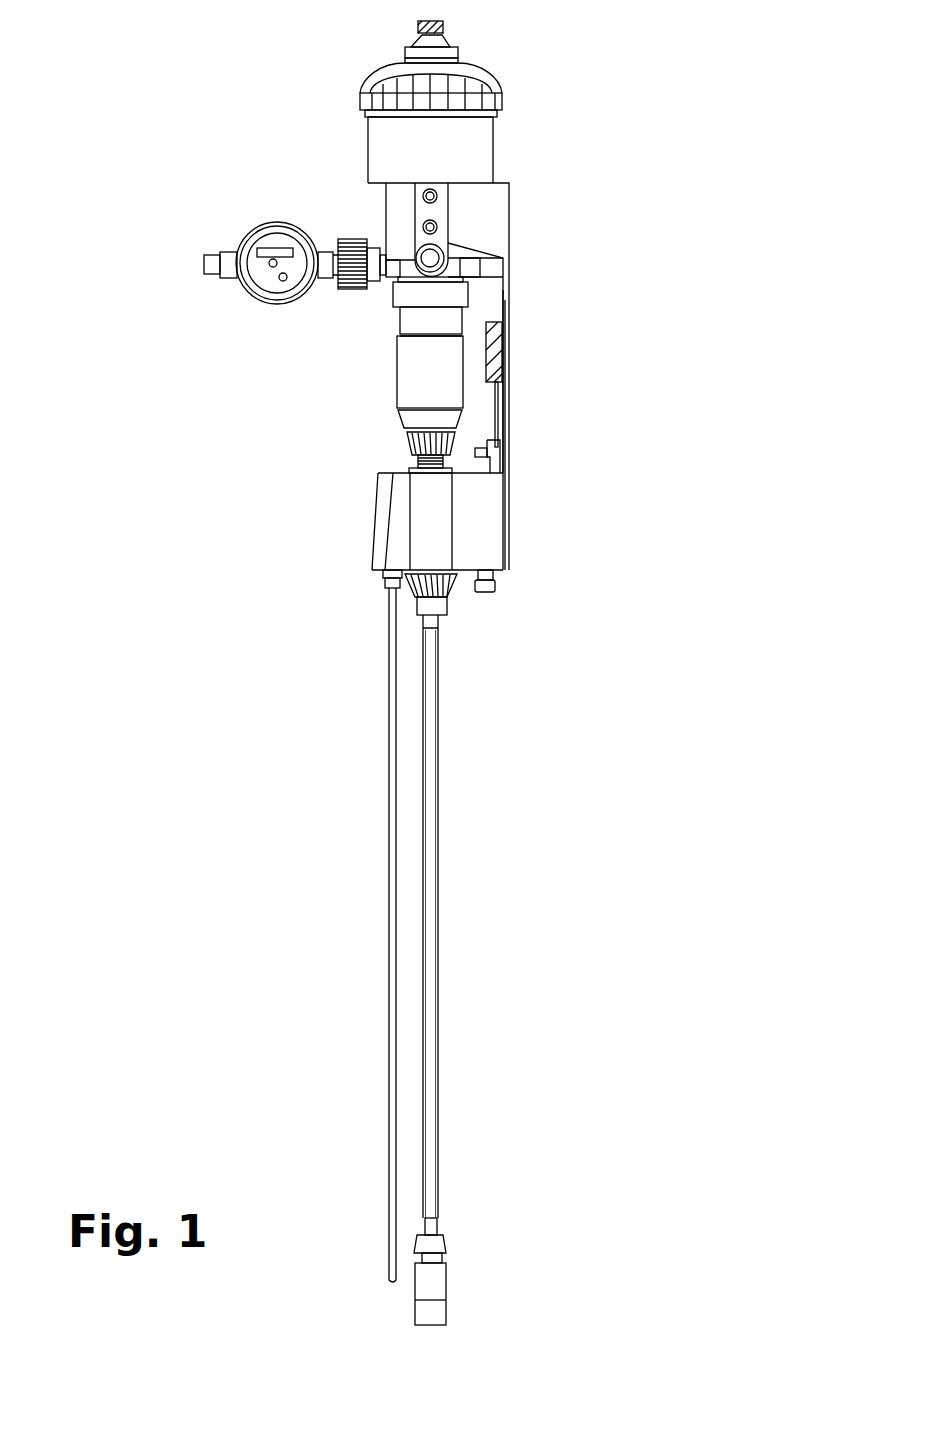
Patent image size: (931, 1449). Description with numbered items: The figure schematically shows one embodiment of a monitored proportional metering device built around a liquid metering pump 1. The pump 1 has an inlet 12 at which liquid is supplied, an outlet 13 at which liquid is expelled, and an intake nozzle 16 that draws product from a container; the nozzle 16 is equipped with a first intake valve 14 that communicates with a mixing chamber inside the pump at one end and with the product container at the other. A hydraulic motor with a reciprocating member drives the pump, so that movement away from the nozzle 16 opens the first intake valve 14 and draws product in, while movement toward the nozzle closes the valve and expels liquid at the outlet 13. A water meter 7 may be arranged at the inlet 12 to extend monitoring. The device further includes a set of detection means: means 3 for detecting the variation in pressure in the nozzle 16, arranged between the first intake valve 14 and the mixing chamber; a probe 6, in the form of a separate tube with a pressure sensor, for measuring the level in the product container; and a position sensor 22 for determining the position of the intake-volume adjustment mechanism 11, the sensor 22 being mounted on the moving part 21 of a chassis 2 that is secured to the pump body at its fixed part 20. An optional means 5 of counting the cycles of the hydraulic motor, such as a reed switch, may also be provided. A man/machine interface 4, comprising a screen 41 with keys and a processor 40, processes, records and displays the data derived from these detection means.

The liquid metering pump 1 is at (387, 307).
The chassis 2 is at (521, 416).
The means for detecting the variation in pressure in the nozzle 3 is at (467, 517).
The man/machine interface 4 is at (339, 521).
The means of counting the cycles of the hydraulic motor 5 is at (446, 28).
The probe 6 is at (371, 864).
The water meter 7 is at (245, 297).
The intake-volume adjustment mechanism 11 is at (417, 360).
The inlet 12 is at (378, 250).
The outlet 13 is at (470, 268).
The first intake valve 14 is at (430, 642).
The intake nozzle 16 is at (426, 1141).
The fixed part 20 is at (493, 225).
The moving part 21 is at (514, 548).
The position sensor 22 is at (498, 360).
The processor 40 is at (384, 485).
The screen 41 is at (398, 533).